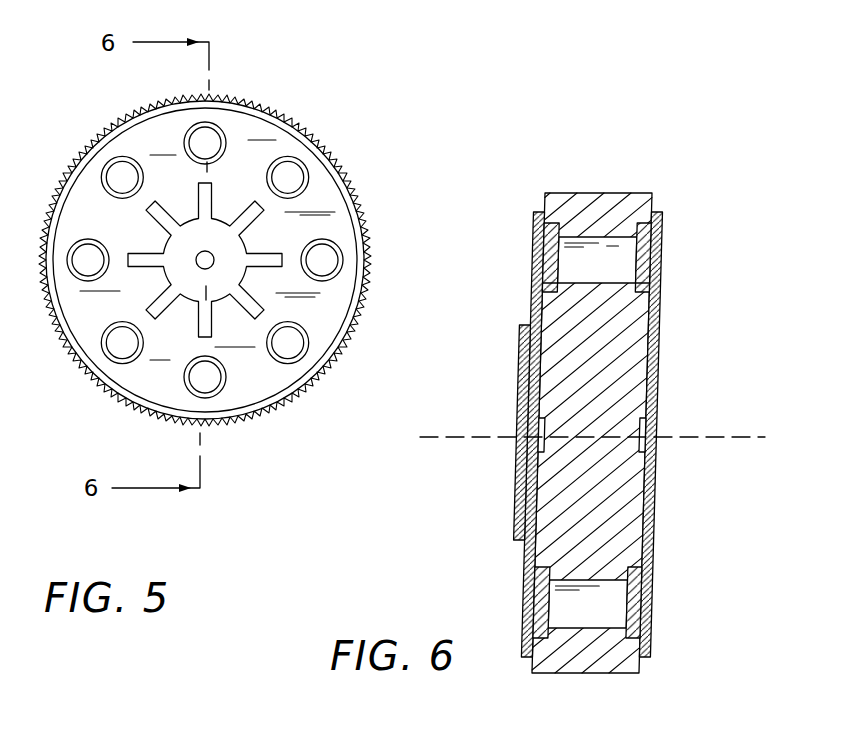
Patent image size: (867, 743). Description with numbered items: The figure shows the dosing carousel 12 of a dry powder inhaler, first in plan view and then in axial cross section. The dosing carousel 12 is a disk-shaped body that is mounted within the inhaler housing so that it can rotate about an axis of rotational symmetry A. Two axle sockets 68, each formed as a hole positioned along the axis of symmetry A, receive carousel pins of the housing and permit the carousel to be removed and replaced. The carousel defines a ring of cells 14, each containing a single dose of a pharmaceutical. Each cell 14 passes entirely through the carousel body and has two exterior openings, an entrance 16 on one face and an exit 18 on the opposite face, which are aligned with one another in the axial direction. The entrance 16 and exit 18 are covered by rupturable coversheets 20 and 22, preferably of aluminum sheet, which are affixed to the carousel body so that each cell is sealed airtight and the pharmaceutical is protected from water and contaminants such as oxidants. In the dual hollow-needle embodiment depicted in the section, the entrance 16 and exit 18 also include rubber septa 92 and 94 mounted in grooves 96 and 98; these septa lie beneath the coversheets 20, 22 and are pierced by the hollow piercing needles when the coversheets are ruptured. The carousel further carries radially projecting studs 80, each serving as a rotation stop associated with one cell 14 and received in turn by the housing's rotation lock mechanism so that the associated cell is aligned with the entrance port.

In FIG. 5, the dosing carousel 12 is at (336, 118).
In FIG. 6, the dosing carousel 12 is at (449, 485).
In FIG. 5, the cell 14 is at (331, 251).
In FIG. 6, the cell 14 is at (600, 248).
In FIG. 6, the entrance 16 is at (537, 247).
In FIG. 6, the exit 18 is at (657, 248).
In FIG. 6, the entrance coversheet 20 is at (520, 570).
In FIG. 6, the exit coversheet 22 is at (650, 562).
In FIG. 5, the axle socket 68 is at (197, 253).
In FIG. 6, the axle socket 68 is at (540, 433).
In FIG. 5, the stud 80 is at (152, 202).
In FIG. 6, the stud 80 is at (512, 497).
In FIG. 6, the entrance septum 92 is at (546, 267).
In FIG. 6, the exit septum 94 is at (655, 263).
In FIG. 5, the groove 96 is at (228, 142).
In FIG. 6, the groove 96 is at (548, 285).
In FIG. 6, the groove 98 is at (658, 288).
In FIG. 6, the axis of rotational symmetry A is at (458, 435).